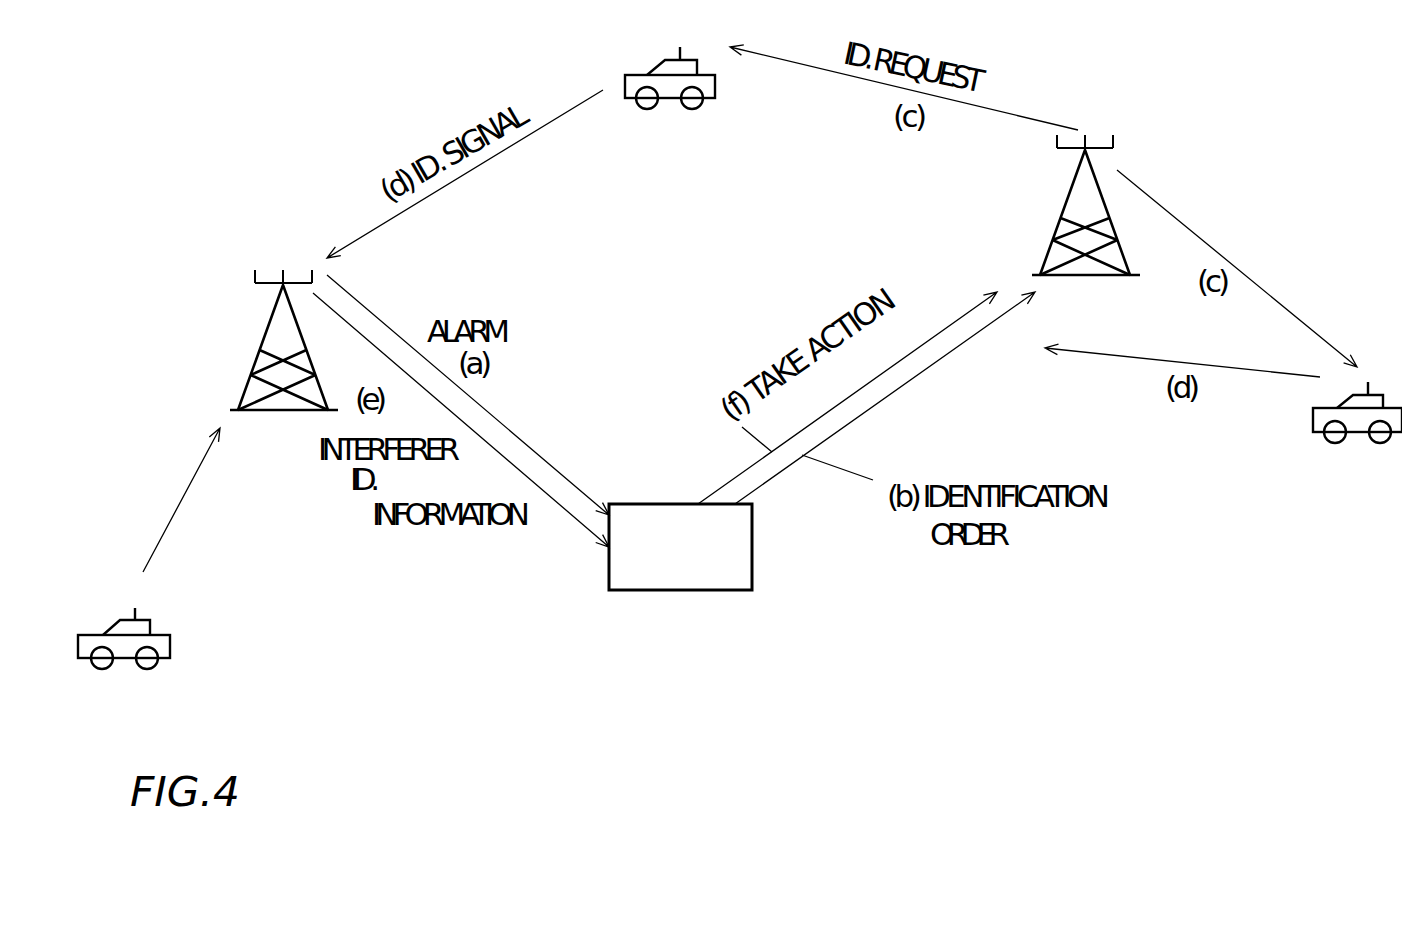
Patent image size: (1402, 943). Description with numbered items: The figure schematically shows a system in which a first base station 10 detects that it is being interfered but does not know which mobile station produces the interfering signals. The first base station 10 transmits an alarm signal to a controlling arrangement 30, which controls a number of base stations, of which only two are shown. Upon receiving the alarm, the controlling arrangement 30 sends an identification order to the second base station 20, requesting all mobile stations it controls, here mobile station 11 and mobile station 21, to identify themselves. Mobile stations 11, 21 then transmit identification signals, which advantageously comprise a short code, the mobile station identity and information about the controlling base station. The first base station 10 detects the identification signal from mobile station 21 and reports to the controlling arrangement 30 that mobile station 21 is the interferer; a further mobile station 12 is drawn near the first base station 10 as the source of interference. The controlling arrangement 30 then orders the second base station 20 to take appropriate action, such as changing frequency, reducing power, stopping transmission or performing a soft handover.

The base station 10 is at (265, 350).
The second base station 20 is at (1063, 205).
The mobile station 21 is at (635, 75).
The mobile station 11 is at (1363, 435).
The interfering mobile station 12 is at (123, 660).
The controlling arrangement 30 is at (673, 590).